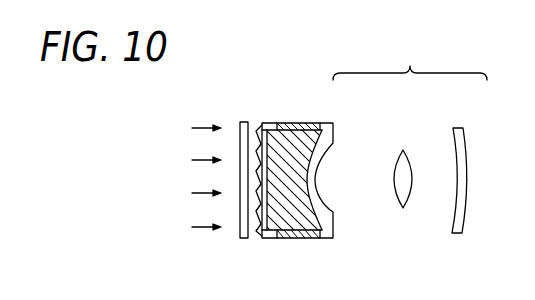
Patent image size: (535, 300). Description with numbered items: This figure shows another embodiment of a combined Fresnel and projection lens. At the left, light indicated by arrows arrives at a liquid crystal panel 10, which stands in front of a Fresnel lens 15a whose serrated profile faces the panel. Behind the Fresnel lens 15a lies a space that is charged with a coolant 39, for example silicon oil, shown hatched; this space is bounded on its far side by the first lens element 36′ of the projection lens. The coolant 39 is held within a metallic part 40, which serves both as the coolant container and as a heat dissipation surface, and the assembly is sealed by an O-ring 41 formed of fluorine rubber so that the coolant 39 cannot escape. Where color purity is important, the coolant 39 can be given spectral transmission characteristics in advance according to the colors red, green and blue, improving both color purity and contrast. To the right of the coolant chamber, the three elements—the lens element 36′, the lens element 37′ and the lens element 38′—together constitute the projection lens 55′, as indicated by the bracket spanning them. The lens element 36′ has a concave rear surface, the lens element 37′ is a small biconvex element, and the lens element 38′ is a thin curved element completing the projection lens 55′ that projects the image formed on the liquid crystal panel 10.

The liquid crystal panel 10 is at (240, 122).
The Fresnel lens 15a is at (262, 123).
The metallic part 40 is at (296, 130).
The O-ring 41 is at (273, 238).
The coolant 39 is at (301, 222).
The lens element 36′ is at (333, 136).
The lens element 37′ is at (405, 148).
The lens element 38′ is at (463, 130).
The projection lens 55′ is at (410, 62).